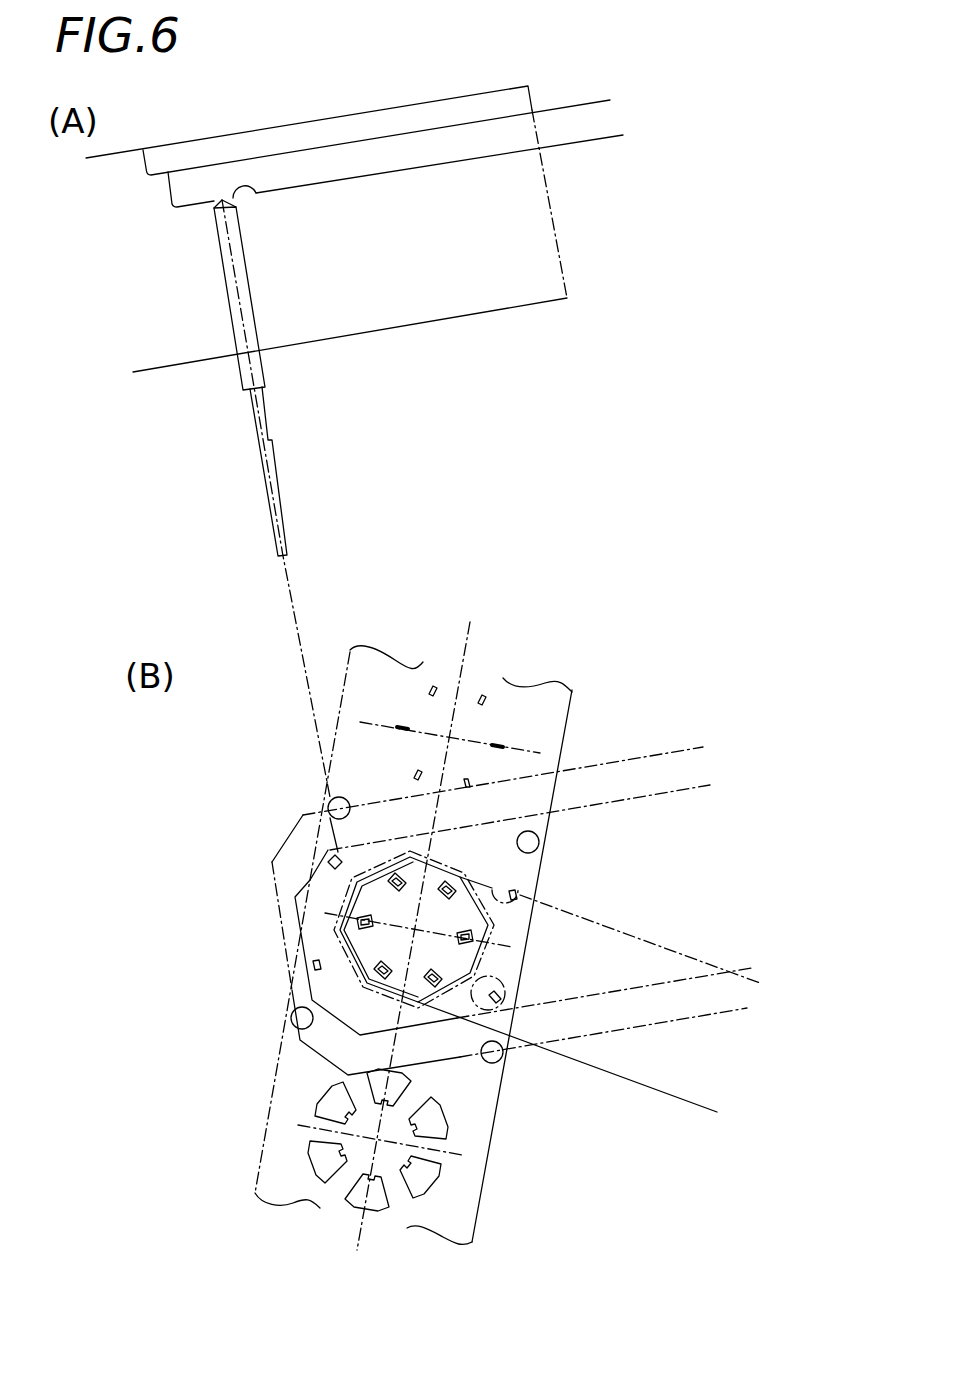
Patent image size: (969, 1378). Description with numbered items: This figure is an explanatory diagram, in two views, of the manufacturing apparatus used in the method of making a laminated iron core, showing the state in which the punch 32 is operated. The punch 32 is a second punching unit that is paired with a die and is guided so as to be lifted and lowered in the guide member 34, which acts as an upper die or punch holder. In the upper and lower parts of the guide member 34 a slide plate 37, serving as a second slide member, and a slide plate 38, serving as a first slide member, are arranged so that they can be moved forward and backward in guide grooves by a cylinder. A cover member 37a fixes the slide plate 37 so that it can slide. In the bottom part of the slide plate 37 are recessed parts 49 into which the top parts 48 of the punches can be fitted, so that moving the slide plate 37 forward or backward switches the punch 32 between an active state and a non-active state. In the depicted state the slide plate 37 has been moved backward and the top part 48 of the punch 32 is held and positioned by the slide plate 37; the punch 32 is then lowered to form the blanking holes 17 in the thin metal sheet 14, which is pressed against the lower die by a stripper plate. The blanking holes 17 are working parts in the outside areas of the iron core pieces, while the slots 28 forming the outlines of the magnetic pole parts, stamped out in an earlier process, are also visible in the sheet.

The thin metal sheet 14 is at (498, 1112).
The blanking holes 17 is at (315, 966).
The slots 28 is at (423, 1170).
The punch 32 is at (268, 422).
The guide member 34 is at (495, 292).
The slide plate 37 is at (598, 125).
The cover member 37a is at (380, 110).
The slide plate 38 is at (652, 1090).
The top part 48 is at (220, 200).
The recessed parts 49 is at (243, 193).